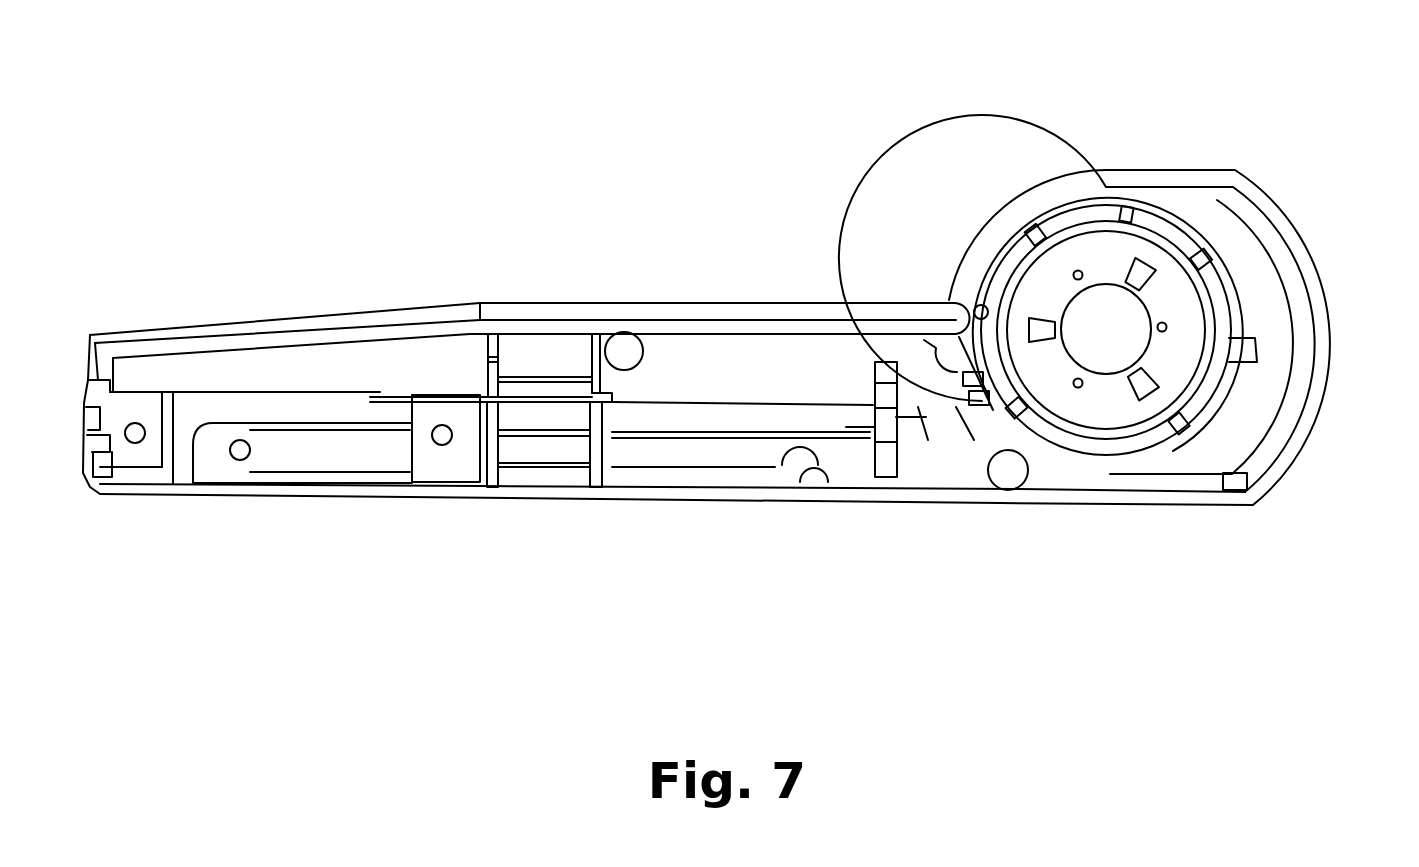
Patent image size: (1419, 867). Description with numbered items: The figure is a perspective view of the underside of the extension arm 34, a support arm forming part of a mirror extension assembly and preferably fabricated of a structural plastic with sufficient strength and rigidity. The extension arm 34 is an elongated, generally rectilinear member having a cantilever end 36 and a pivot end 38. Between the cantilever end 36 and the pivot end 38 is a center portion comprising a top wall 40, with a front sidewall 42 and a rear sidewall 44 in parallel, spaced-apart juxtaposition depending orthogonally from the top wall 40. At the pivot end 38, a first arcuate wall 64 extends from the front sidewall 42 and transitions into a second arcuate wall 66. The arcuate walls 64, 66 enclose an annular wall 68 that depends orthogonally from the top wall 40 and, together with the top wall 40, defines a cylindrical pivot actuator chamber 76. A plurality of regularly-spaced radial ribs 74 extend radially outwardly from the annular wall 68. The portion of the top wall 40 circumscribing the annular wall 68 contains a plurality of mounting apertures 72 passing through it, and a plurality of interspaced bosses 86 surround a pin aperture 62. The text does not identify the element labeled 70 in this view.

The extension arm 34 is at (658, 197).
The cantilever end 36 is at (137, 496).
The pivot end 38 is at (1327, 277).
The top wall 40 is at (788, 380).
The front sidewall 42 is at (711, 318).
The rear sidewall 44 is at (717, 481).
The pin aperture 62 is at (1115, 358).
The first arcuate wall 64 is at (1024, 200).
The second arcuate wall 66 is at (1298, 389).
The annular wall 68 is at (1148, 265).
The wheel 70 is at (1185, 345).
The mounting apertures 72 is at (1076, 270).
The radial ribs 74 is at (970, 268).
The pivot actuator chamber 76 is at (1092, 344).
The bosses 86 is at (1158, 250).